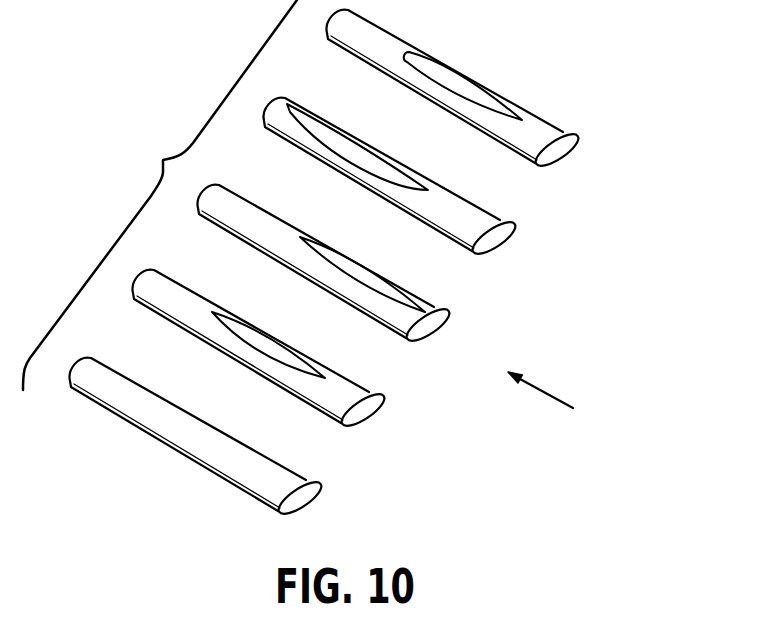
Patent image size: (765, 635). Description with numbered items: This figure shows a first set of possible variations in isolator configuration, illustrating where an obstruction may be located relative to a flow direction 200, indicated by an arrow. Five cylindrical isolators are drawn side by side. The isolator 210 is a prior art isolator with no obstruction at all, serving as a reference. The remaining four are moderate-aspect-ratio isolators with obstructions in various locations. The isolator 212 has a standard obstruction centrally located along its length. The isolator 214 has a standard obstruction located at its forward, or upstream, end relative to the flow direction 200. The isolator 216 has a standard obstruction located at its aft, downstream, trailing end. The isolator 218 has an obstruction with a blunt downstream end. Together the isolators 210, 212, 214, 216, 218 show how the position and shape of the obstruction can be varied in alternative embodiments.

The flow direction 200 is at (547, 393).
The isolator 210 is at (306, 478).
The isolator 212 is at (369, 390).
The isolator 214 is at (434, 305).
The isolator 216 is at (500, 218).
The isolator 218 is at (563, 130).